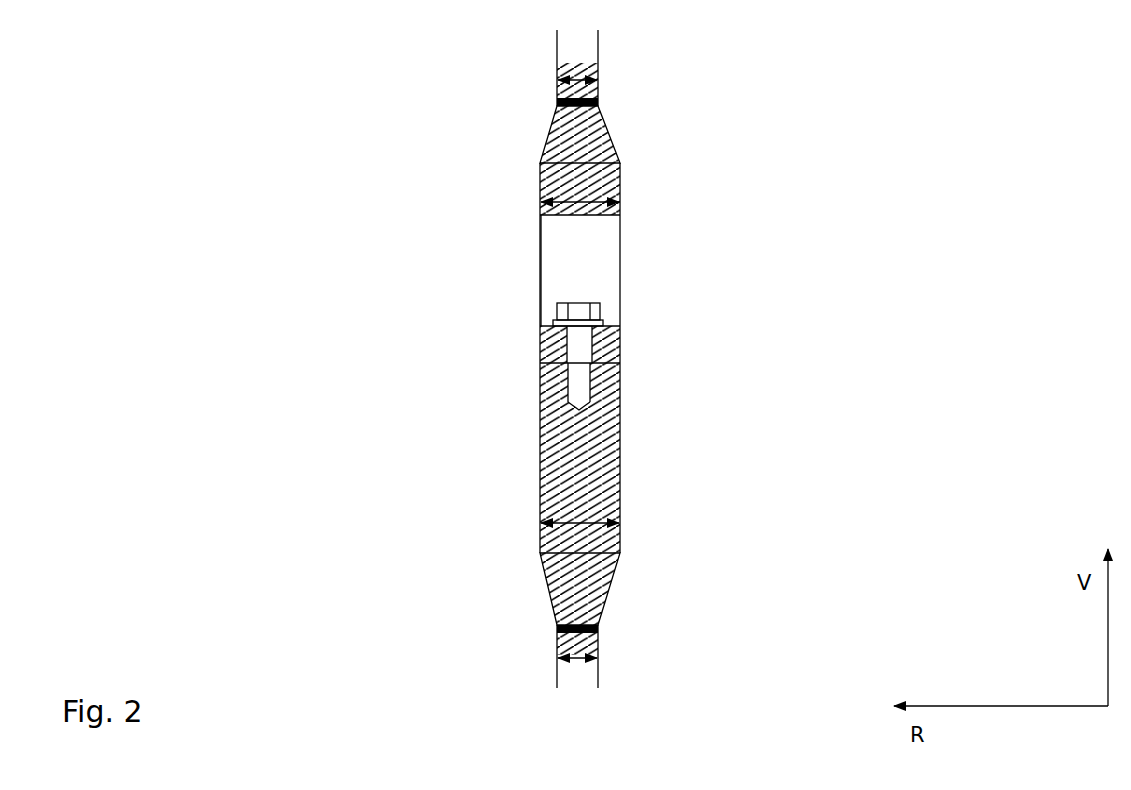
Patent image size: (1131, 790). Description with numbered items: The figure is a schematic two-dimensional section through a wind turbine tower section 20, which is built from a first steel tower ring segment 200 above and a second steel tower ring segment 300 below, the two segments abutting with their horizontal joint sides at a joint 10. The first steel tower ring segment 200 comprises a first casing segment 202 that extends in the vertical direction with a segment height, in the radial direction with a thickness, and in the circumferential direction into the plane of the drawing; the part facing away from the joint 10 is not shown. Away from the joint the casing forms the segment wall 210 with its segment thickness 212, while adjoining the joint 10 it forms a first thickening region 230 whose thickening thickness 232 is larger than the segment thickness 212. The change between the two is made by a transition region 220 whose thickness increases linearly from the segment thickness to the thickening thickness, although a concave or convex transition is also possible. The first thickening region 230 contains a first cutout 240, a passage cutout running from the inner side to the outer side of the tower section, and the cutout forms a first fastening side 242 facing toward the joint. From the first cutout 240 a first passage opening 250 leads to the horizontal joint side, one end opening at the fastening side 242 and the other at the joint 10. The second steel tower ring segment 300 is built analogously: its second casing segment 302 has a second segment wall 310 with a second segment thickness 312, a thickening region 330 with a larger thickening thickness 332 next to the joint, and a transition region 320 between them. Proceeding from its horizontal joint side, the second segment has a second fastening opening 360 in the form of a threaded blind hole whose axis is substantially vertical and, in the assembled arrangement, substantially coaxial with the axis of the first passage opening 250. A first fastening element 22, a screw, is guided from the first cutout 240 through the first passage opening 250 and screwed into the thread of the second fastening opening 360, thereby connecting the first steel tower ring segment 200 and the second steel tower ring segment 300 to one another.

The tower section 20 is at (924, 129).
The first steel tower ring segment 200 is at (436, 116).
The first casing segment 202 is at (660, 66).
The segment wall 210 is at (577, 53).
The segment thickness 212 is at (578, 72).
The transition region 220 is at (605, 160).
The first thickening region 230 is at (656, 221).
The thickening thickness 232 is at (570, 195).
The first cutout 240 is at (539, 247).
The first fastening side 242 is at (544, 319).
The first passage opening 250 is at (595, 343).
The joint 10 is at (624, 363).
The second fastening opening 360 is at (595, 383).
The first fastening element 22 is at (573, 390).
The second steel tower ring segment 300 is at (465, 545).
The second casing segment 302 is at (630, 587).
The second segment wall 310 is at (575, 675).
The second segment thickness 312 is at (580, 663).
The transition region 320 is at (572, 572).
The thickening region 330 is at (639, 493).
The thickening thickness 332 is at (570, 523).